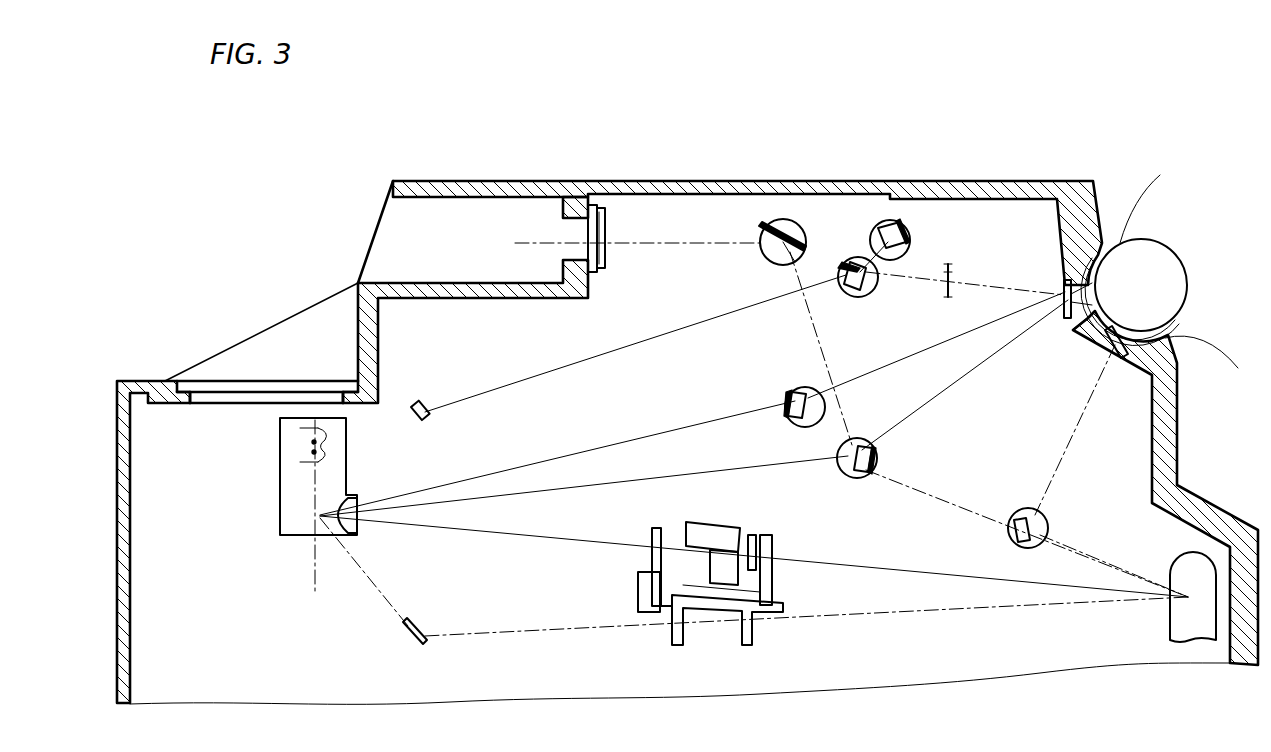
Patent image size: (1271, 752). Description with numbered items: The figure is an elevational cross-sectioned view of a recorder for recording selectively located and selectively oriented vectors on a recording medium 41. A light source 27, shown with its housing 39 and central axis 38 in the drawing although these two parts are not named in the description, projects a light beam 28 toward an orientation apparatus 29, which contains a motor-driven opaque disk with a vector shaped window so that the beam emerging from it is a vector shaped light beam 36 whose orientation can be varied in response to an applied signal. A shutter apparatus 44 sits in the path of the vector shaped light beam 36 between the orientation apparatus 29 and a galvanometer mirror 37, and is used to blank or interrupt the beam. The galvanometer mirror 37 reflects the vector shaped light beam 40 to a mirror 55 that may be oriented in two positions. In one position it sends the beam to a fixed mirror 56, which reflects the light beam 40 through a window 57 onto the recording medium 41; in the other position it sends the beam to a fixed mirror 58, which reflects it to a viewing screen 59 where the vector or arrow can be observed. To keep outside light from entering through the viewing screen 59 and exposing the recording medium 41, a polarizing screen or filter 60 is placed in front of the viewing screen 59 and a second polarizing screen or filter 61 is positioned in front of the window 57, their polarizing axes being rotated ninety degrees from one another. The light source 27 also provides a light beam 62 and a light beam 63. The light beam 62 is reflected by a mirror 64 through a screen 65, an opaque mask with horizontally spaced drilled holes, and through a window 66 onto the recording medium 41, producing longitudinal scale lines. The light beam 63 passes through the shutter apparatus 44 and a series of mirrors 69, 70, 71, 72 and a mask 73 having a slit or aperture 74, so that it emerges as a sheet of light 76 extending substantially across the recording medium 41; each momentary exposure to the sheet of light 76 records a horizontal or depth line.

The light source 27 is at (1170, 628).
The light beam 28 is at (680, 247).
The orientation apparatus 29 is at (735, 600).
The vector shaped light beam 36 is at (540, 535).
The galvanometer mirror 37 is at (310, 535).
The lamp axis 38 is at (327, 602).
The lamp housing 39 is at (300, 462).
The vector shaped light beam 40 is at (600, 480).
The recording medium 41 is at (1205, 345).
The shutter apparatus 44 is at (652, 552).
The mirror 55 is at (870, 474).
The fixed mirror 56 is at (786, 406).
The window 57 is at (1080, 325).
The fixed mirror 58 is at (800, 232).
The viewing screen 59 is at (599, 208).
The polarizing screen or filter 60 is at (588, 233).
The polarizing screen or filter 61 is at (1063, 285).
The light beam 62 is at (1065, 450).
The light beam 63 is at (543, 385).
The mirror 64 is at (1012, 530).
The screen 65 is at (1150, 315).
The window 66 is at (1115, 350).
The mirror 69 is at (405, 648).
The mirror 70 is at (416, 402).
The mirror 71 is at (900, 232).
The mirror 72 is at (872, 292).
The mask 73 is at (950, 268).
The slit or aperture 74 is at (950, 297).
The sheet of light 76 is at (985, 295).